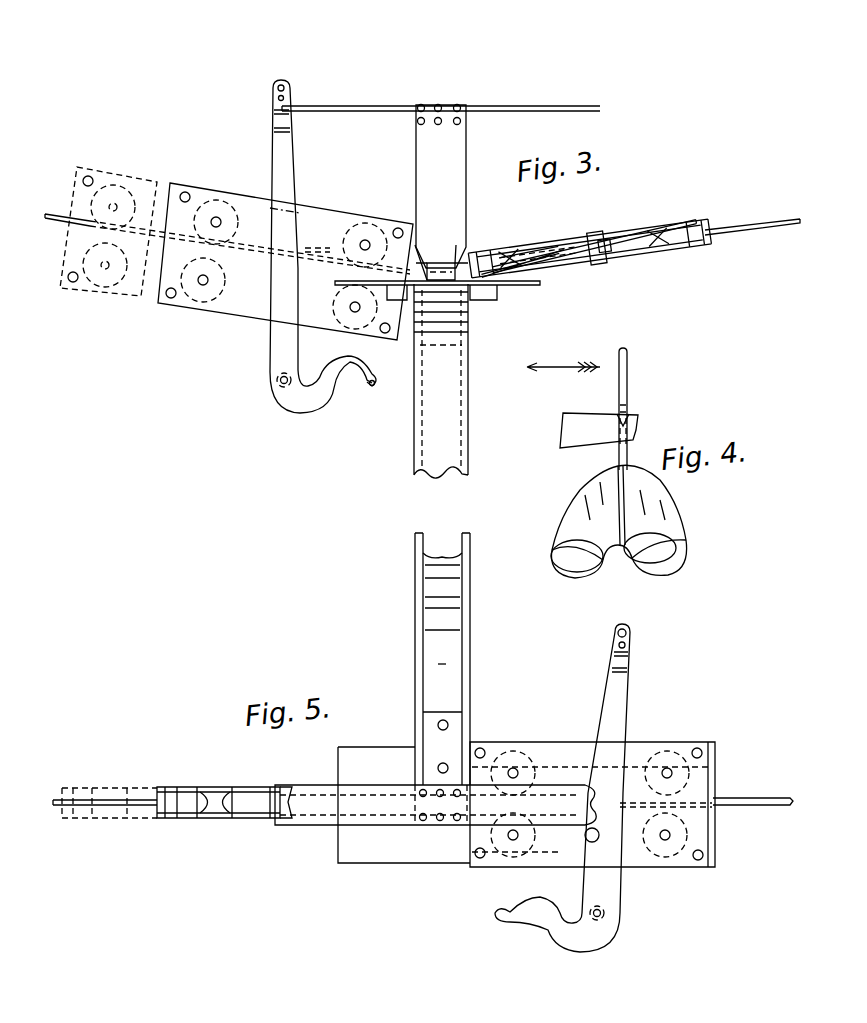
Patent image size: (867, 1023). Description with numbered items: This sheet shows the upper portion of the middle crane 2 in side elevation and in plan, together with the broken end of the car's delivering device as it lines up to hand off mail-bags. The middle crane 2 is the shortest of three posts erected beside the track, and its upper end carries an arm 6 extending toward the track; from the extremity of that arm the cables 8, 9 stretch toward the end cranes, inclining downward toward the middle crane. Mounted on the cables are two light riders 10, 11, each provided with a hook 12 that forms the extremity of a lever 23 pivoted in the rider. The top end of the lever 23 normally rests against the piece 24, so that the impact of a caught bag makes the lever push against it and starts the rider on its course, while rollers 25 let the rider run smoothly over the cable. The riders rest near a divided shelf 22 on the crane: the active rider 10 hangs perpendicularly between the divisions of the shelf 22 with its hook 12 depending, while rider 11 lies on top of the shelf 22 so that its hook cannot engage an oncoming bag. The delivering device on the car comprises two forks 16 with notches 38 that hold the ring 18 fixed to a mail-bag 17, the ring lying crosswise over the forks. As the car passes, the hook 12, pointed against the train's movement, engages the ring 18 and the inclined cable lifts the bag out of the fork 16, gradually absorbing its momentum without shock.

In FIG. 3, the middle crane 2 is at (452, 388).
In FIG. 5, the middle crane 2 is at (462, 691).
In FIG. 3, the arm 6 is at (421, 265).
In FIG. 3, the cable 8 is at (227, 244).
In FIG. 5, the cable 8 is at (148, 800).
In FIG. 3, the cable 9 is at (757, 228).
In FIG. 5, the cable 9 is at (757, 805).
In FIG. 3, the rider 10 is at (236, 312).
In FIG. 5, the rider 10 is at (255, 788).
In FIG. 3, the rider 11 is at (648, 278).
In FIG. 5, the rider 11 is at (559, 750).
In FIG. 5, the hook 12 is at (532, 918).
In FIG. 4, the fork 16 is at (592, 438).
In FIG. 4, the mail-bag 17 is at (648, 504).
In FIG. 4, the ring 18 is at (630, 408).
In FIG. 3, the shelf 22 is at (528, 286).
In FIG. 5, the shelf 22 is at (404, 805).
In FIG. 5, the lever 23 is at (620, 700).
In FIG. 3, the piece 24 is at (378, 114).
In FIG. 5, the piece 24 is at (435, 805).
In FIG. 5, the rollers 25 is at (208, 836).
In FIG. 4, the notches 38 is at (635, 426).